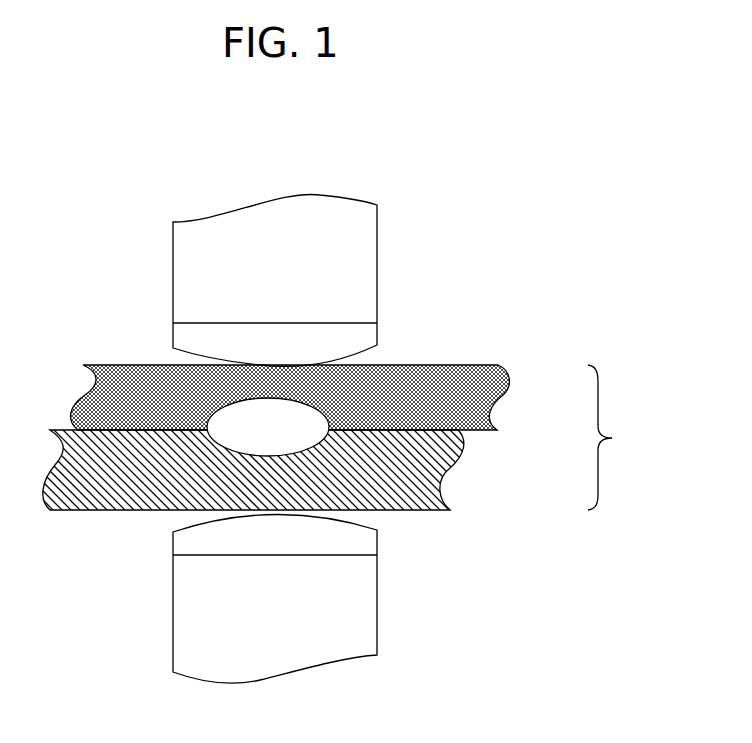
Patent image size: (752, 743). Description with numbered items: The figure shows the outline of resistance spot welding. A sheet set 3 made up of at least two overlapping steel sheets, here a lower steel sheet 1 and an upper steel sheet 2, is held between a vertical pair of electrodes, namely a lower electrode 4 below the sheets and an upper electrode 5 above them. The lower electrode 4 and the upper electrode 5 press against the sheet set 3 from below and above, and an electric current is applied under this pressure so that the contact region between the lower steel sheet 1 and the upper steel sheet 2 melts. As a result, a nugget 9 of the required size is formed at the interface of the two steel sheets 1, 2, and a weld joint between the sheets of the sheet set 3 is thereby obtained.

The lower steel sheet 1 is at (448, 478).
The upper steel sheet 2 is at (500, 397).
The sheet set 3 is at (611, 437).
The lower electrode 4 is at (365, 608).
The upper electrode 5 is at (367, 288).
The nugget 9 is at (228, 438).